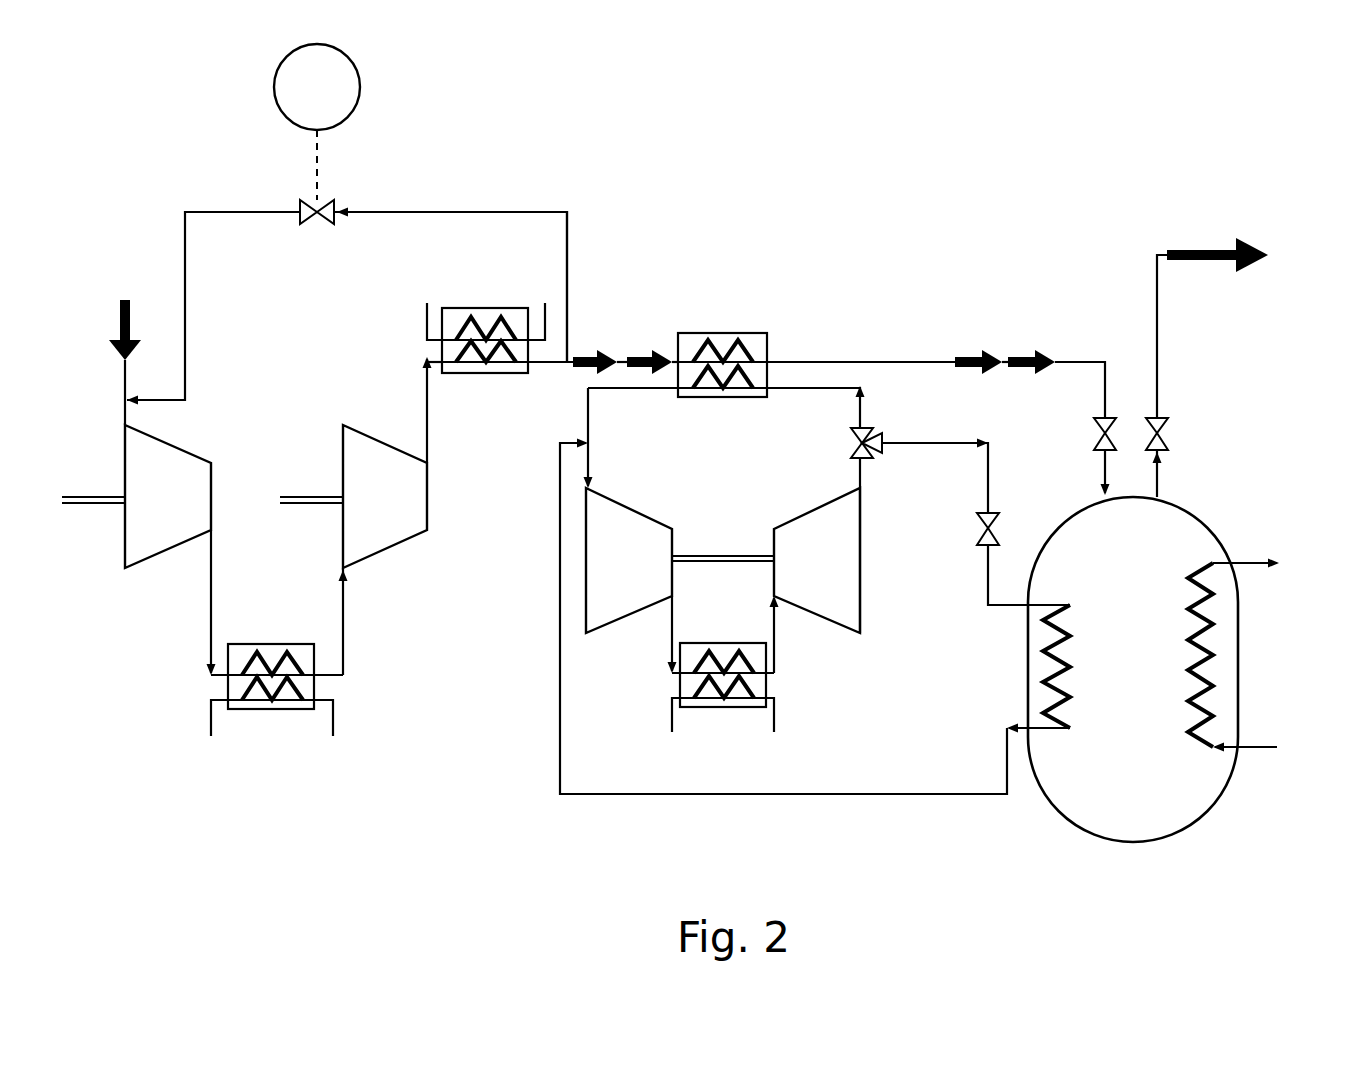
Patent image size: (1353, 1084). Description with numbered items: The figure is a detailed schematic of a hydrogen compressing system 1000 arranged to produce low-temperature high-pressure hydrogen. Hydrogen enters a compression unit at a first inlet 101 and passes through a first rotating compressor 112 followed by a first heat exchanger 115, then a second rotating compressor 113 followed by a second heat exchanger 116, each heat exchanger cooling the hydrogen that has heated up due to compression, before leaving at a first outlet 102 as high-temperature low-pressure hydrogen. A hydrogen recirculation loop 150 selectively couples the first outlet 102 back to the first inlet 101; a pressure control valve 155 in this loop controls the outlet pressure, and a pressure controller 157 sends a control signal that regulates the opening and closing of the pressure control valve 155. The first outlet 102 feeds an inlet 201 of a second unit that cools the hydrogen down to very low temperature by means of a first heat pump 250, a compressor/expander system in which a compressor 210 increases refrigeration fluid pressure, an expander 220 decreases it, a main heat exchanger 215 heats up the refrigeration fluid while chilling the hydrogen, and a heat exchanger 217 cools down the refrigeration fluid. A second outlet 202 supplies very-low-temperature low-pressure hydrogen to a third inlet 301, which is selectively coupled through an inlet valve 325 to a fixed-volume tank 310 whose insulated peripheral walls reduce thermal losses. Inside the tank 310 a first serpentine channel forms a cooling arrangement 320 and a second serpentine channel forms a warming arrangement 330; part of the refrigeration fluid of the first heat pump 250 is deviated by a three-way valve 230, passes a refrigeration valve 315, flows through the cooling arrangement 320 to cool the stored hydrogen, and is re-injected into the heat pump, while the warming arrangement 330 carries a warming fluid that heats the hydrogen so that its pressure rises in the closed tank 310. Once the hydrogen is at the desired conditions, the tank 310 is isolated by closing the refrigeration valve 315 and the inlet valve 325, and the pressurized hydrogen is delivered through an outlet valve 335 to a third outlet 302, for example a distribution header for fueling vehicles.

The hydrogen compressing system 1000 is at (202, 792).
The first inlet 101 is at (122, 318).
The first outlet 102 is at (600, 355).
The first rotating compressor 112 is at (150, 538).
The second rotating compressor 113 is at (372, 538).
The first heat exchanger 115 is at (248, 709).
The second heat exchanger 116 is at (448, 373).
The hydrogen recirculation loop 150 is at (527, 212).
The pressure control valve 155 is at (302, 197).
The pressure controller 157 is at (337, 103).
The inlet of second unit 201 is at (665, 355).
The second outlet 202 is at (965, 358).
The compressor 210 is at (615, 589).
The main heat exchanger 215 is at (745, 333).
The heat exchanger 217 is at (702, 707).
The expander 220 is at (805, 585).
The three-way valve 230 is at (851, 437).
The first heat pump 250 is at (752, 608).
The third inlet 301 is at (1045, 358).
The third outlet 302 is at (1205, 248).
The tank 310 is at (1187, 718).
The refrigeration valve 315 is at (983, 520).
The cooling arrangement 320 is at (1068, 600).
The inlet valve 325 is at (1097, 447).
The warming arrangement 330 is at (1212, 713).
The outlet valve 335 is at (1165, 447).